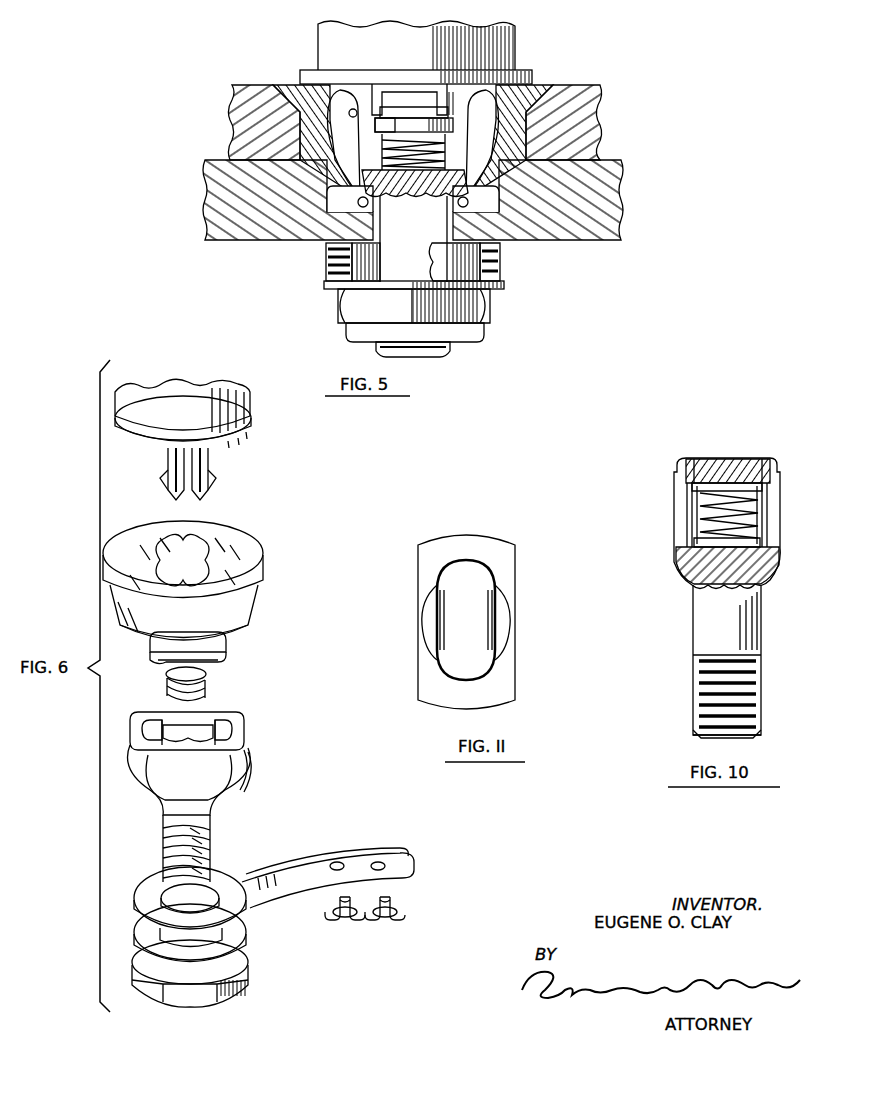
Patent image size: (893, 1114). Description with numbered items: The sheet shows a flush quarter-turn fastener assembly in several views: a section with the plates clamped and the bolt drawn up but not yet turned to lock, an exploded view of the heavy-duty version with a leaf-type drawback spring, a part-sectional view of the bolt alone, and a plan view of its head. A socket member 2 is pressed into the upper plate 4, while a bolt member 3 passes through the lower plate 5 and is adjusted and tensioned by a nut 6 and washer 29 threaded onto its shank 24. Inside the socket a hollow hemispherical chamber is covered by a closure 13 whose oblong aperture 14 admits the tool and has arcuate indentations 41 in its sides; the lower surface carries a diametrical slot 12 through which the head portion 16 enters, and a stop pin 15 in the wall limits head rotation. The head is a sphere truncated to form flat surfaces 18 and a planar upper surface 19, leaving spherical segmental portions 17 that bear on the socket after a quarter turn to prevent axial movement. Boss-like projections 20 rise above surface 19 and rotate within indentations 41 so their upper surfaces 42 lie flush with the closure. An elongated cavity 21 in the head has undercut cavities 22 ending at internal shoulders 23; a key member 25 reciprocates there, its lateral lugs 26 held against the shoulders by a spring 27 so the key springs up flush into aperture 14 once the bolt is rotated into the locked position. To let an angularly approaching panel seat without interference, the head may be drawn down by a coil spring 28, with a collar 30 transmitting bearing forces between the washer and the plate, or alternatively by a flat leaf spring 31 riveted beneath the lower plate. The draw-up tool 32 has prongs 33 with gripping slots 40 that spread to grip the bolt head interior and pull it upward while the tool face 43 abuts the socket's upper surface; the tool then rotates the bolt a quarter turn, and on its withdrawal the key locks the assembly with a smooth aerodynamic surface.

In FIG. 5, the socket member 2 is at (276, 70).
In FIG. 6, the socket member 2 is at (258, 582).
In FIG. 5, the bolt member 3 is at (413, 239).
In FIG. 6, the bolt member 3 is at (250, 782).
In FIG. 11, the bolt member 3 is at (422, 538).
In FIG. 10, the bolt member 3 is at (680, 617).
In FIG. 5, the upper plate 4 is at (572, 100).
In FIG. 5, the lower plate 5 is at (588, 234).
In FIG. 5, the nut 6 is at (360, 304).
In FIG. 6, the nut 6 is at (248, 968).
In FIG. 5, the slot 12 is at (358, 203).
In FIG. 6, the closure 13 is at (160, 545).
In FIG. 6, the aperture 14 is at (195, 535).
In FIG. 5, the stop pin 15 is at (353, 109).
In FIG. 6, the head portion 16 is at (155, 798).
In FIG. 6, the spherical segmental portions 17 is at (138, 760).
In FIG. 5, the flat surfaces 18 is at (350, 144).
In FIG. 6, the flat surfaces 18 is at (218, 802).
In FIG. 11, the flat surfaces 18 is at (420, 640).
In FIG. 5, the planar upper surface 19 is at (415, 183).
In FIG. 6, the planar upper surface 19 is at (232, 730).
In FIG. 11, the planar upper surface 19 is at (478, 546).
In FIG. 10, the planar upper surface 19 is at (727, 523).
In FIG. 6, the boss-like projections 20 is at (205, 722).
In FIG. 11, the boss-like projections 20 is at (432, 602).
In FIG. 10, the boss-like projections 20 is at (682, 460).
In FIG. 6, the cavity 21 is at (230, 735).
In FIG. 11, the cavity 21 is at (460, 678).
In FIG. 10, the cavity 21 is at (686, 558).
In FIG. 6, the undercut cavities 22 is at (178, 715).
In FIG. 10, the undercut cavities 22 is at (694, 527).
In FIG. 10, the internal shoulders 23 is at (772, 460).
In FIG. 5, the shank 24 is at (450, 348).
In FIG. 6, the shank 24 is at (175, 838).
In FIG. 10, the shank 24 is at (700, 694).
In FIG. 5, the key member 25 is at (412, 111).
In FIG. 6, the key member 25 is at (220, 640).
In FIG. 11, the key member 25 is at (463, 610).
In FIG. 10, the key member 25 is at (726, 468).
In FIG. 5, the lugs 26 is at (410, 143).
In FIG. 6, the lugs 26 is at (172, 674).
In FIG. 10, the lugs 26 is at (692, 487).
In FIG. 5, the spring 27 is at (412, 186).
In FIG. 6, the spring 27 is at (212, 680).
In FIG. 10, the spring 27 is at (755, 520).
In FIG. 5, the coil spring 28 is at (326, 251).
In FIG. 5, the washer 29 is at (328, 286).
In FIG. 6, the washer 29 is at (240, 930).
In FIG. 5, the collar 30 is at (420, 272).
In FIG. 6, the flat leaf spring 31 is at (285, 874).
In FIG. 5, the tool 32 is at (318, 45).
In FIG. 6, the tool 32 is at (165, 410).
In FIG. 5, the prongs 33 is at (444, 92).
In FIG. 6, the prongs 33 is at (168, 458).
In FIG. 6, the slots 40 is at (165, 478).
In FIG. 6, the arcuate indentations 41 is at (184, 563).
In FIG. 11, the upper surfaces 42 is at (435, 612).
In FIG. 10, the upper surfaces 42 is at (694, 460).
In FIG. 5, the tool face 43 is at (335, 144).
In FIG. 6, the tool face 43 is at (245, 433).